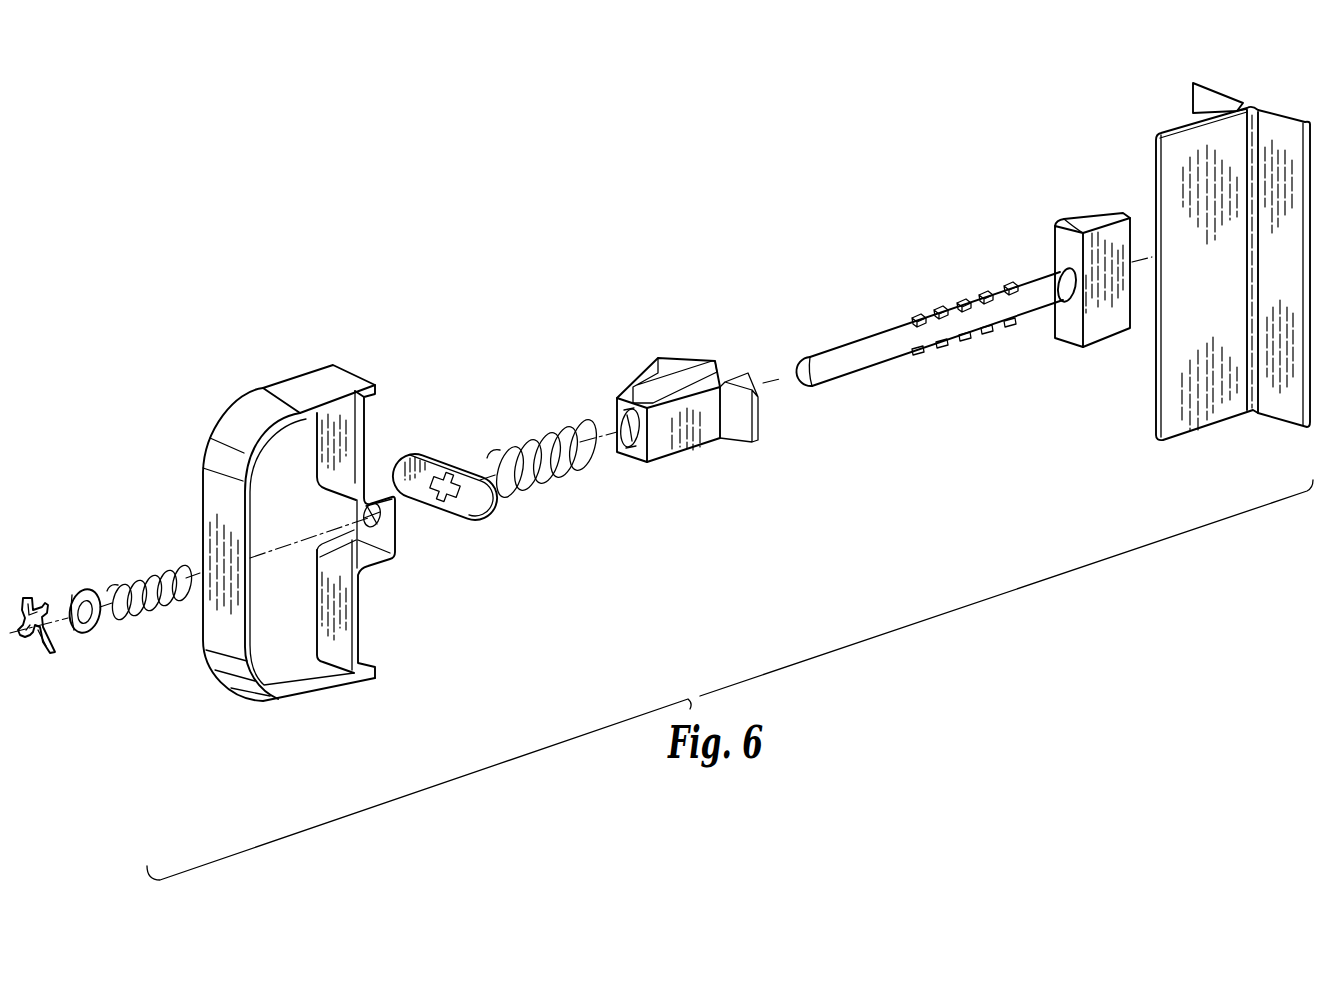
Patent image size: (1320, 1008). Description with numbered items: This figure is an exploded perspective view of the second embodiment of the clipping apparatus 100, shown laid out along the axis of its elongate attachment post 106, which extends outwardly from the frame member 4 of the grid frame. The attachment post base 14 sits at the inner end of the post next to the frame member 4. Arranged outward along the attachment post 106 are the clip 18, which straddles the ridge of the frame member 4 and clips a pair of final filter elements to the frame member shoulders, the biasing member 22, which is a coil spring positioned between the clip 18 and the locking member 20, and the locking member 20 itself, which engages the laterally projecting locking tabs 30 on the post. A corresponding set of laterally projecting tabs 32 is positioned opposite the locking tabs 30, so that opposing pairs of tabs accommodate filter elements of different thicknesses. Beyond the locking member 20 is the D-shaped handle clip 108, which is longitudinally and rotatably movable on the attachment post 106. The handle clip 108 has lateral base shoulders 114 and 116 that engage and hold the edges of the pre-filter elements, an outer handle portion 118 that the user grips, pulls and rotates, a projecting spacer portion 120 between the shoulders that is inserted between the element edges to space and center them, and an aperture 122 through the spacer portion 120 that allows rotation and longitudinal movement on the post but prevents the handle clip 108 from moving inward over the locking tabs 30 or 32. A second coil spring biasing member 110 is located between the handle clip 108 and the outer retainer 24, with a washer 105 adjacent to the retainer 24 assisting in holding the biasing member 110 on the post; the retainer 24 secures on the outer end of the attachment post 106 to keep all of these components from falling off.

The frame member 4 is at (1258, 116).
The attachment post base 14 is at (1080, 228).
The clip 18 is at (672, 357).
The locking member 20 is at (470, 515).
The biasing member 22 is at (570, 483).
The retainer 24 is at (50, 650).
The locking tab 30 is at (1012, 285).
The laterally projecting tabs 32 is at (944, 347).
The clipping apparatus 100 is at (500, 261).
The washer 105 is at (84, 590).
The attachment post 106 is at (937, 350).
The handle clip 108 is at (302, 507).
The biasing member 110 is at (126, 578).
The lateral base shoulder 114 is at (336, 438).
The lateral base shoulder 116 is at (335, 612).
The outer handle portion 118 is at (225, 605).
The projecting spacer portion 120 is at (380, 475).
The aperture 122 is at (373, 527).